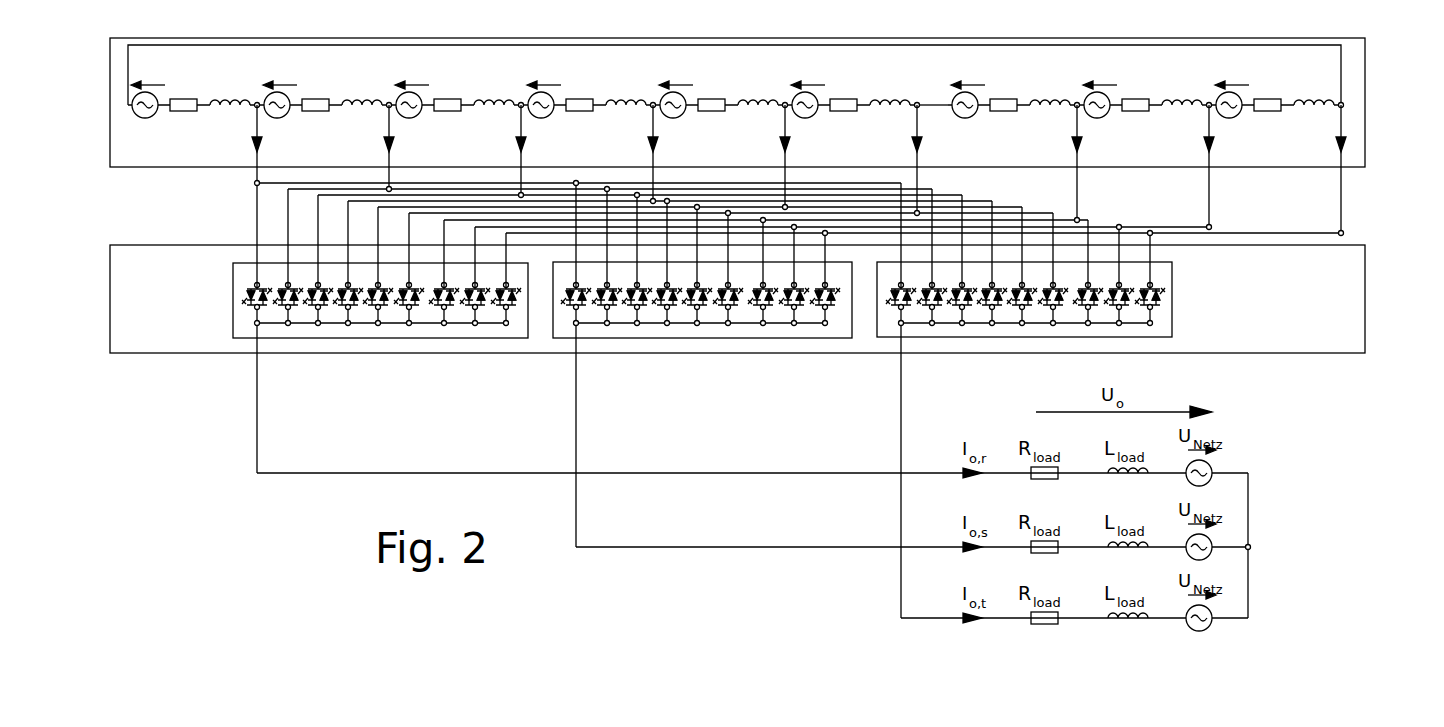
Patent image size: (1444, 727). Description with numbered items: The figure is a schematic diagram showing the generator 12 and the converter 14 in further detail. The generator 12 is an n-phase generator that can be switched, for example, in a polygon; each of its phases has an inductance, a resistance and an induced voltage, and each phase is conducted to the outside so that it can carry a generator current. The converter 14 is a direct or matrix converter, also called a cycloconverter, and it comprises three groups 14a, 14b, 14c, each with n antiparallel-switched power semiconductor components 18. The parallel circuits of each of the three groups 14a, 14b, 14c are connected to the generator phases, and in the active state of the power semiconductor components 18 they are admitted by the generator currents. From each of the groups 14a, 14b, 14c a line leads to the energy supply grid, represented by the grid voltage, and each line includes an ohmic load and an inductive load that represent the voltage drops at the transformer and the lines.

The generator 12 is at (1353, 68).
The converter 14 is at (1340, 303).
The first group of power semiconductor components 14a is at (341, 345).
The second group of power semiconductor components 14b is at (565, 340).
The third group of power semiconductor components 14c is at (1163, 315).
The power semiconductor component 18 is at (307, 282).